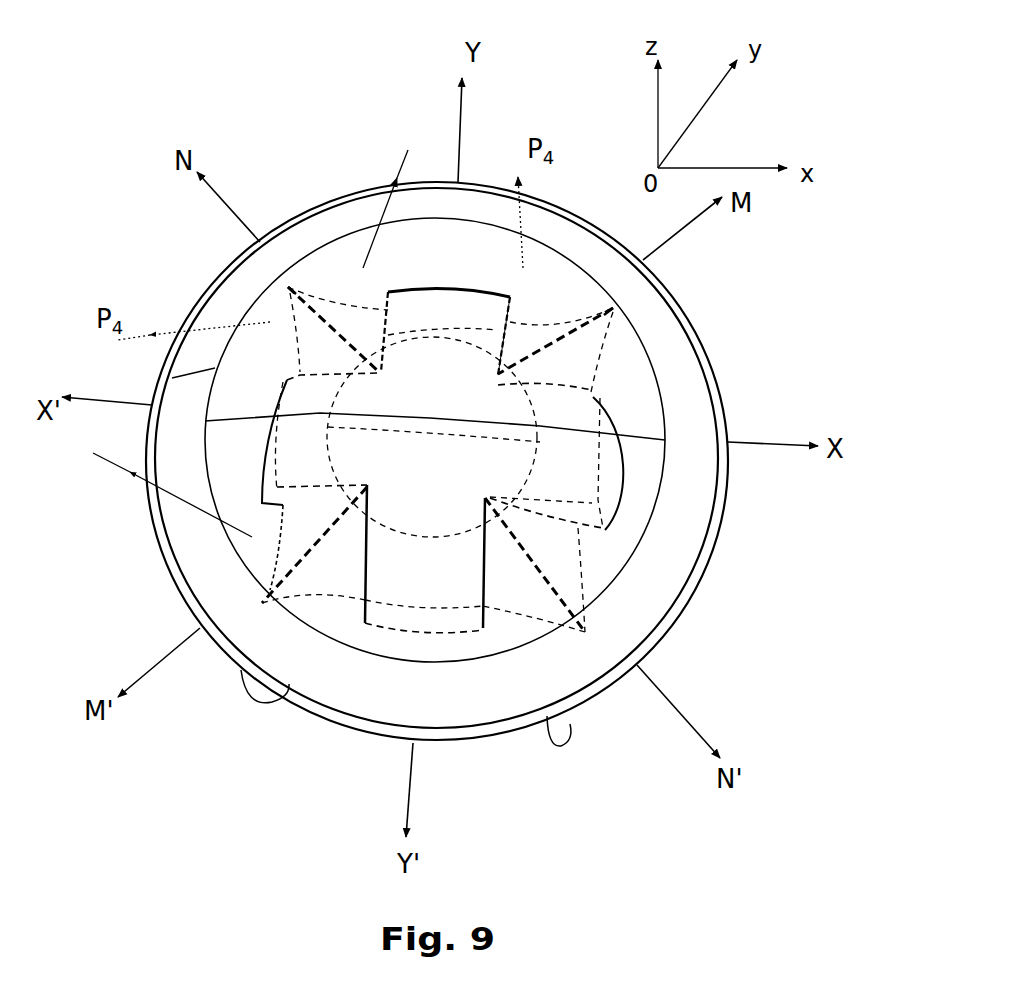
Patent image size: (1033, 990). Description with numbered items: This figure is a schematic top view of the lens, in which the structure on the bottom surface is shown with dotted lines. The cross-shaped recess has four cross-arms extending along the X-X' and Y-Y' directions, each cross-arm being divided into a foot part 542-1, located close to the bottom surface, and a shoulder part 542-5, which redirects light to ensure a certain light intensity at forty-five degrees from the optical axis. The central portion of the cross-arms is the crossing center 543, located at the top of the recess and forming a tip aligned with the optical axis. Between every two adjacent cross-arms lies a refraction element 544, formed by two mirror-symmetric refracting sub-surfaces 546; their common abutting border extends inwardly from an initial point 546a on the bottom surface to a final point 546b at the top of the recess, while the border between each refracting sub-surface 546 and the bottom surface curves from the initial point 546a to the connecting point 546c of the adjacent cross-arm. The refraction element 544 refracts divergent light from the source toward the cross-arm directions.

The crossing center 543 is at (410, 513).
The refraction element 544 is at (524, 596).
The refracting sub-surface 546 is at (633, 319).
The initial point 546a is at (585, 352).
The final point 546b is at (498, 380).
The connecting point 546c is at (592, 388).
The foot part 542-1 is at (612, 471).
The shoulder part 542-5 is at (583, 500).